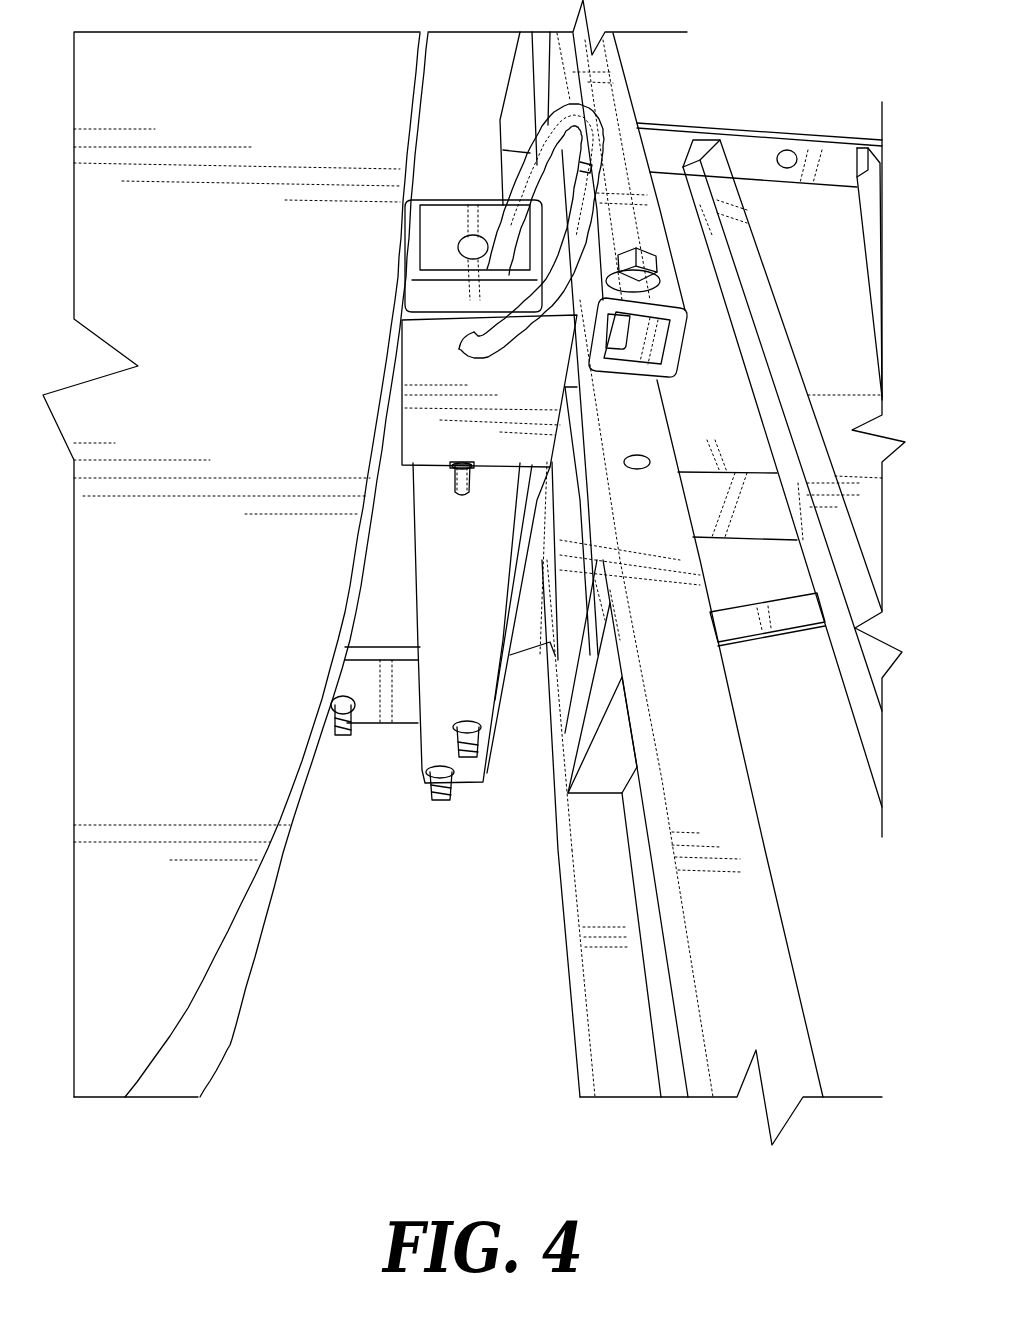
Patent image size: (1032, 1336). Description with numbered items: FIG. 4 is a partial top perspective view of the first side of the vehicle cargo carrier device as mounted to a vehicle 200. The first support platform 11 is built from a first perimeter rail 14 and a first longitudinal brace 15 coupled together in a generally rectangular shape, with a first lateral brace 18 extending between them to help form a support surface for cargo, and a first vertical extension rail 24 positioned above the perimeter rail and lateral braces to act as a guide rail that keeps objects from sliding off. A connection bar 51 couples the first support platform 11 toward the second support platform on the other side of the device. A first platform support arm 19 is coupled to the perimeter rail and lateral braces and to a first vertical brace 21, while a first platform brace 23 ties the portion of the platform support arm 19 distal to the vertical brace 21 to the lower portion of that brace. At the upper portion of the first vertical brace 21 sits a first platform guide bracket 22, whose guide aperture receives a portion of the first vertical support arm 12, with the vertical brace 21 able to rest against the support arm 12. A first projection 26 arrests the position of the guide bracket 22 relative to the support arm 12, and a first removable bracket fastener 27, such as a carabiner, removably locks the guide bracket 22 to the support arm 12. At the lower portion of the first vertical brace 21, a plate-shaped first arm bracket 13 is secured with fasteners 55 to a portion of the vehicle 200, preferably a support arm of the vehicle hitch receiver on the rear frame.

The first support platform 11 is at (822, 113).
The first vertical support arm 12 is at (437, 290).
The first arm bracket 13 is at (403, 695).
The first perimeter rail 14 is at (600, 1012).
The first longitudinal brace 15 is at (740, 150).
The first lateral brace 18 is at (745, 274).
The first platform support arm 19 is at (835, 404).
The first vertical brace 21 is at (527, 497).
The first platform guide bracket 22 is at (437, 372).
The first platform brace 23 is at (743, 622).
The first vertical extension rail 24 is at (735, 830).
The first projection 26 is at (450, 493).
The first removable bracket fastener 27 is at (515, 195).
The connection bar 51 is at (638, 114).
The fasteners 55 is at (335, 712).
The vehicle 200 is at (160, 868).